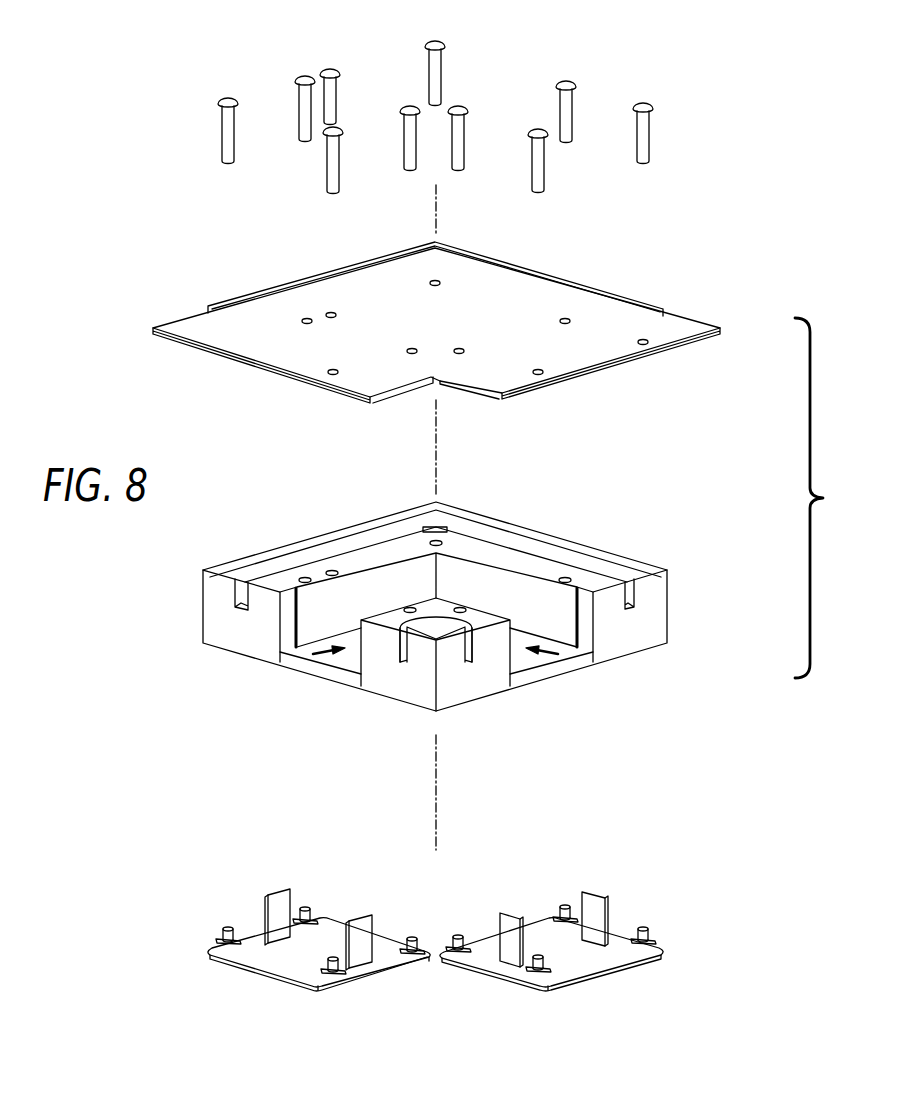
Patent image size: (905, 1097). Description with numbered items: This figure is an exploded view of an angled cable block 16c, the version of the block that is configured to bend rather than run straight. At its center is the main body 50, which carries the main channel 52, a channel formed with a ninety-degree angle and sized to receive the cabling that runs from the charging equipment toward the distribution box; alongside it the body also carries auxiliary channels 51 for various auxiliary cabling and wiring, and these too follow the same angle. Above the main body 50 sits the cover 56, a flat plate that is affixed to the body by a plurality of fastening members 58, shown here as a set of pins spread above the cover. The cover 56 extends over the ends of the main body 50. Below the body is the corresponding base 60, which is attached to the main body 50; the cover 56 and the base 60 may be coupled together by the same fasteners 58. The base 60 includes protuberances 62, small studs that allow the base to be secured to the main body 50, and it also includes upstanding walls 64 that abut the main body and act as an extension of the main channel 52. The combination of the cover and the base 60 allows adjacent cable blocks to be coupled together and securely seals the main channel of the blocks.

The cable block 16c is at (831, 498).
The main body 50 is at (637, 637).
The auxiliary channels 51 is at (237, 596).
The main channel 52 is at (306, 651).
The cover 56 is at (481, 317).
The fastening members 58 is at (650, 134).
The base 60 is at (283, 960).
The protuberances 62 is at (227, 935).
The walls 64 is at (283, 898).